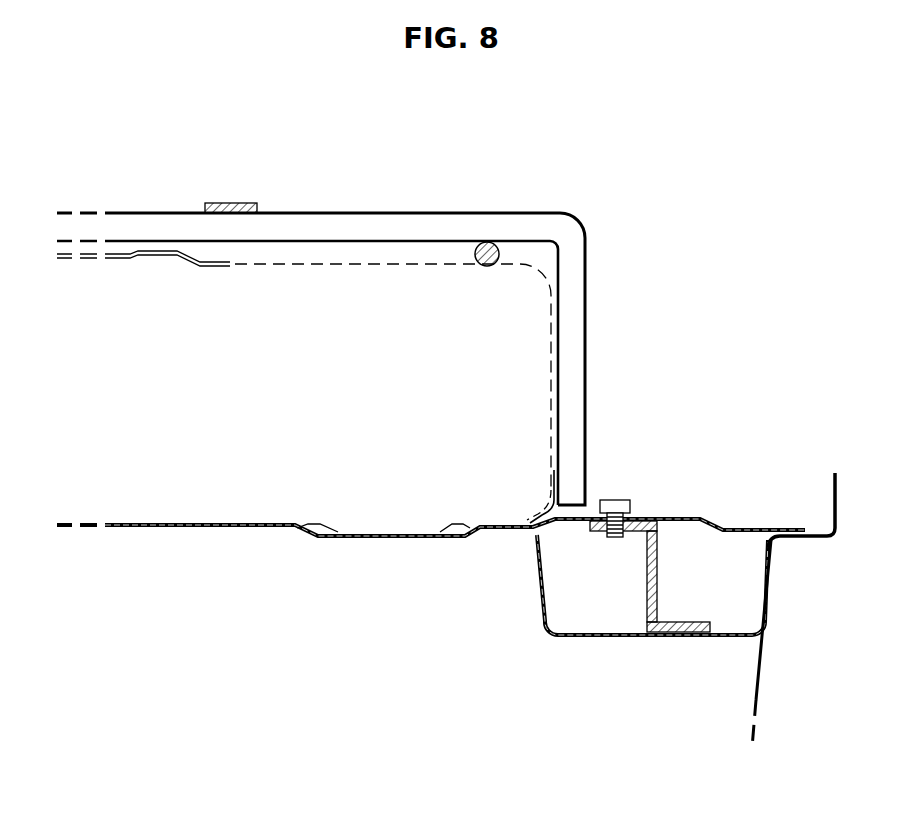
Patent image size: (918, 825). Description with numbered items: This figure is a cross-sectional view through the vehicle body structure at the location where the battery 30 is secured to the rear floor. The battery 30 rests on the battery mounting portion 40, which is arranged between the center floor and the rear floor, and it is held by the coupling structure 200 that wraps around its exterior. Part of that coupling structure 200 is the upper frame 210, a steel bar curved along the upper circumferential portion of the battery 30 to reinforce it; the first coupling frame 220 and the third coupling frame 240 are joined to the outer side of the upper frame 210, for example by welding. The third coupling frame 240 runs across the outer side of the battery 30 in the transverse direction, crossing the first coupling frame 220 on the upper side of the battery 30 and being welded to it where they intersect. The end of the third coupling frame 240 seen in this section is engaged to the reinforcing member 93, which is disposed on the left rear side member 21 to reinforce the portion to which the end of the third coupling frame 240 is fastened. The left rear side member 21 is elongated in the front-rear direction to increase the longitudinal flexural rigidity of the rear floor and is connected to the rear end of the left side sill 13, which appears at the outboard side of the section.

The coupling structure 200 is at (321, 316).
The first coupling frame 220 is at (218, 205).
The third coupling frame 240 is at (369, 221).
The battery 30 is at (403, 263).
The upper frame 210 is at (490, 242).
The battery mounting portion 40 is at (172, 533).
The reinforcing member 93 is at (657, 558).
The left rear side member 21 is at (578, 638).
The left side sill 13 is at (762, 658).